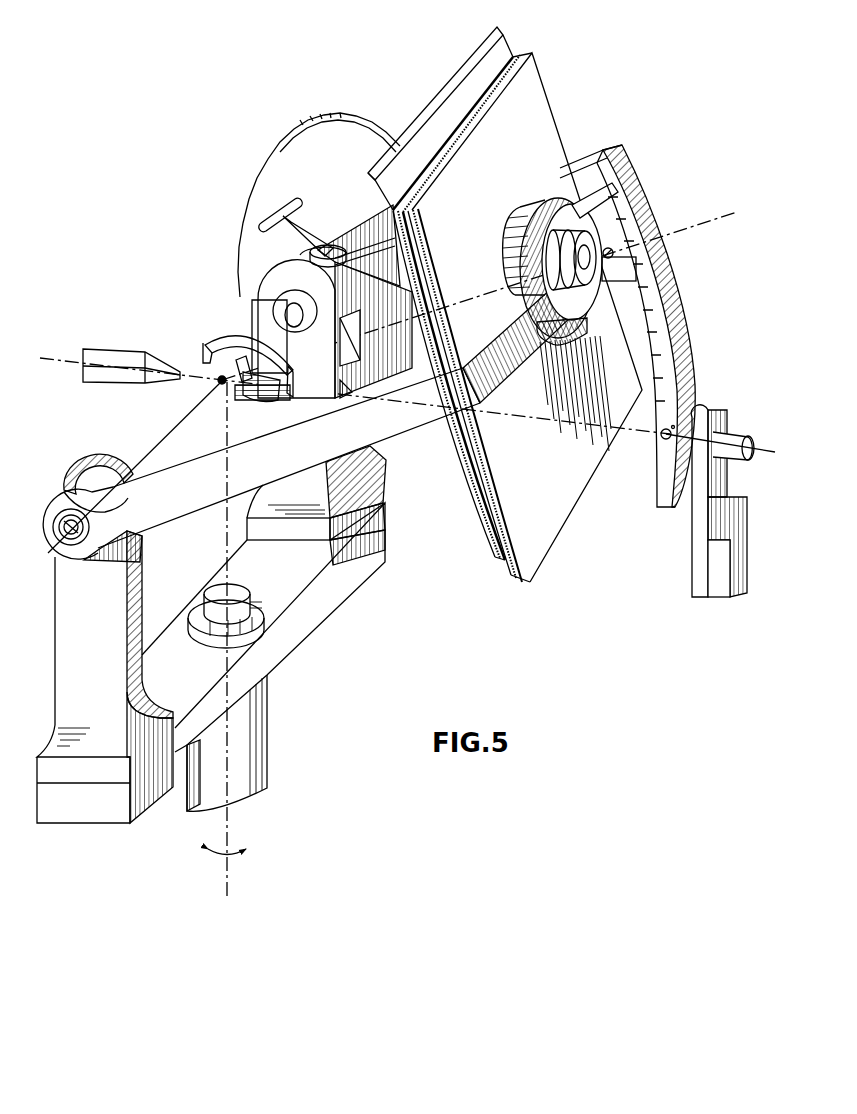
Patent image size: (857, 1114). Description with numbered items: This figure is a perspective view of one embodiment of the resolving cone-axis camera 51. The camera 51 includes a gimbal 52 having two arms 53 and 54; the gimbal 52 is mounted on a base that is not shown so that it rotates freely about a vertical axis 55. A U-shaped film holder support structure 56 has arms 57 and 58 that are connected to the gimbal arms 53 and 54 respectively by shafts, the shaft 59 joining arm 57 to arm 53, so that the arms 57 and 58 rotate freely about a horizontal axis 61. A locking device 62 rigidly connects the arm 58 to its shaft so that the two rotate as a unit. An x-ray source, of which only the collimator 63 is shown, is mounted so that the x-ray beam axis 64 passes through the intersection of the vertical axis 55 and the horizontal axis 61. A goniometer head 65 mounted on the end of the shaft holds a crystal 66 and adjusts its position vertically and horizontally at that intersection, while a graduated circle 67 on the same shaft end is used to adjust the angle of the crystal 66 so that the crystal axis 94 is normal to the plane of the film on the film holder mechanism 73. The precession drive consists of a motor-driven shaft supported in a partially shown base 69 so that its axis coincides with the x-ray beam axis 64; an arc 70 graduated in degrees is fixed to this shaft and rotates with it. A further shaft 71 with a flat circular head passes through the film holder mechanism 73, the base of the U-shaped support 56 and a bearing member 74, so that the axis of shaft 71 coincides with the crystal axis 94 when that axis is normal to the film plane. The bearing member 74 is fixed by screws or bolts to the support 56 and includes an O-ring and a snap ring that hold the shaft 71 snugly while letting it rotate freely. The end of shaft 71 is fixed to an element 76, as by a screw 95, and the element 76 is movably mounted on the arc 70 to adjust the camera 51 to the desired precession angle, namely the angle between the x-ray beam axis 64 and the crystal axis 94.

The camera 51 is at (373, 558).
The gimbal 52 is at (293, 609).
The arm 53 is at (93, 669).
The arm 54 is at (360, 473).
The vertical axis 55 is at (232, 828).
The U-shaped film holder support structure 56 is at (507, 357).
The arm 57 is at (300, 463).
The arm 58 is at (388, 266).
The shaft 59 is at (86, 533).
The horizontal axis 61 is at (161, 450).
The locking device 62 is at (263, 231).
The collimator 63 is at (122, 362).
The x-ray beam axis 64 is at (206, 384).
The goniometer head 65 is at (226, 340).
The crystal 66 is at (231, 383).
The graduated circle 67 is at (255, 166).
The base 69 is at (703, 570).
The arc 70 is at (685, 332).
The further shaft 71 is at (587, 328).
The film holder mechanism 73 is at (546, 112).
The bearing member 74 is at (563, 201).
The element 76 is at (605, 278).
The crystal axis 94 is at (707, 220).
The screw 95 is at (613, 254).